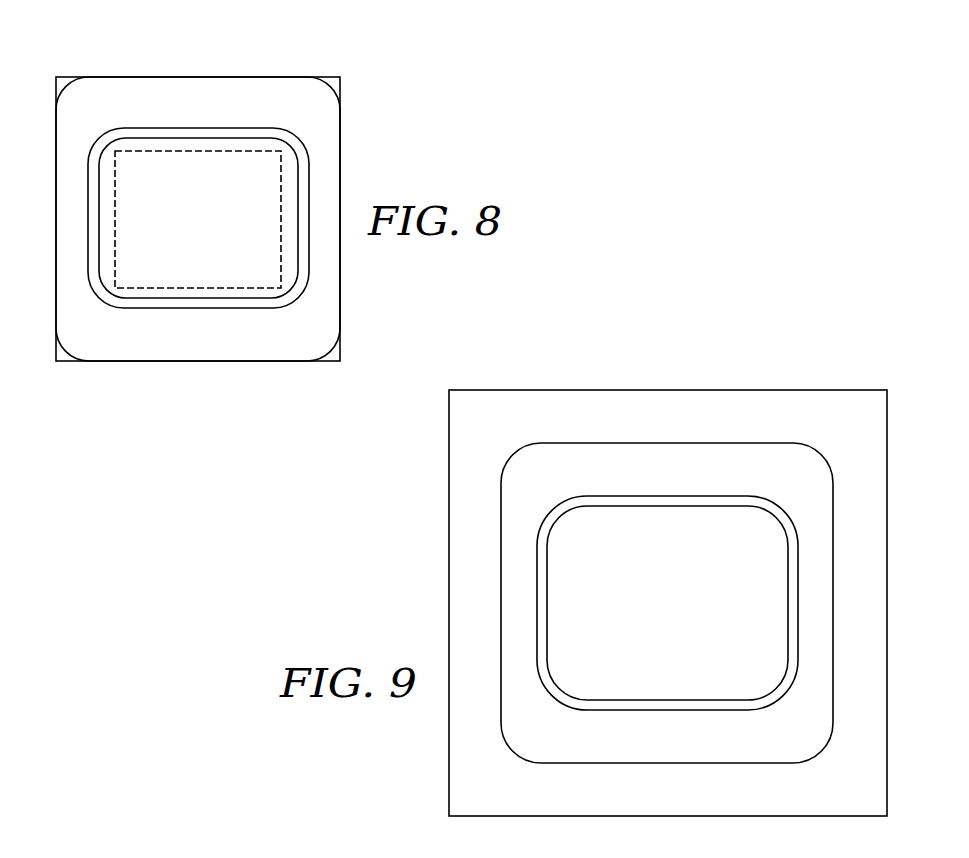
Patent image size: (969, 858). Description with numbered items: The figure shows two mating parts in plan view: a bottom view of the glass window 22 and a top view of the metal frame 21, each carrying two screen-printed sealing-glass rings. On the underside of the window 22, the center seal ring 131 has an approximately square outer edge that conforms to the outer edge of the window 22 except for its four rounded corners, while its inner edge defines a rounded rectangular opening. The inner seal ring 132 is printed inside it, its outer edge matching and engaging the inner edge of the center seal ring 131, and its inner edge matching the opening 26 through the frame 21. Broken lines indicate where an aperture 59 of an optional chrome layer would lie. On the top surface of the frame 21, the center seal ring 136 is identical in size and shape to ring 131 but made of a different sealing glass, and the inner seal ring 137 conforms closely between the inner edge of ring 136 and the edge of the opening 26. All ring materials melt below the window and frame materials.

In FIG. 8, the window 22 is at (329, 80).
In FIG. 8, the center seal ring 131 is at (200, 79).
In FIG. 8, the inner seal ring 132 is at (183, 302).
In FIG. 8, the aperture 59 is at (280, 214).
In FIG. 9, the frame 21 is at (449, 603).
In FIG. 9, the center seal ring 136 is at (646, 752).
In FIG. 9, the inner seal ring 137 is at (540, 602).
In FIG. 9, the opening 26 is at (787, 602).